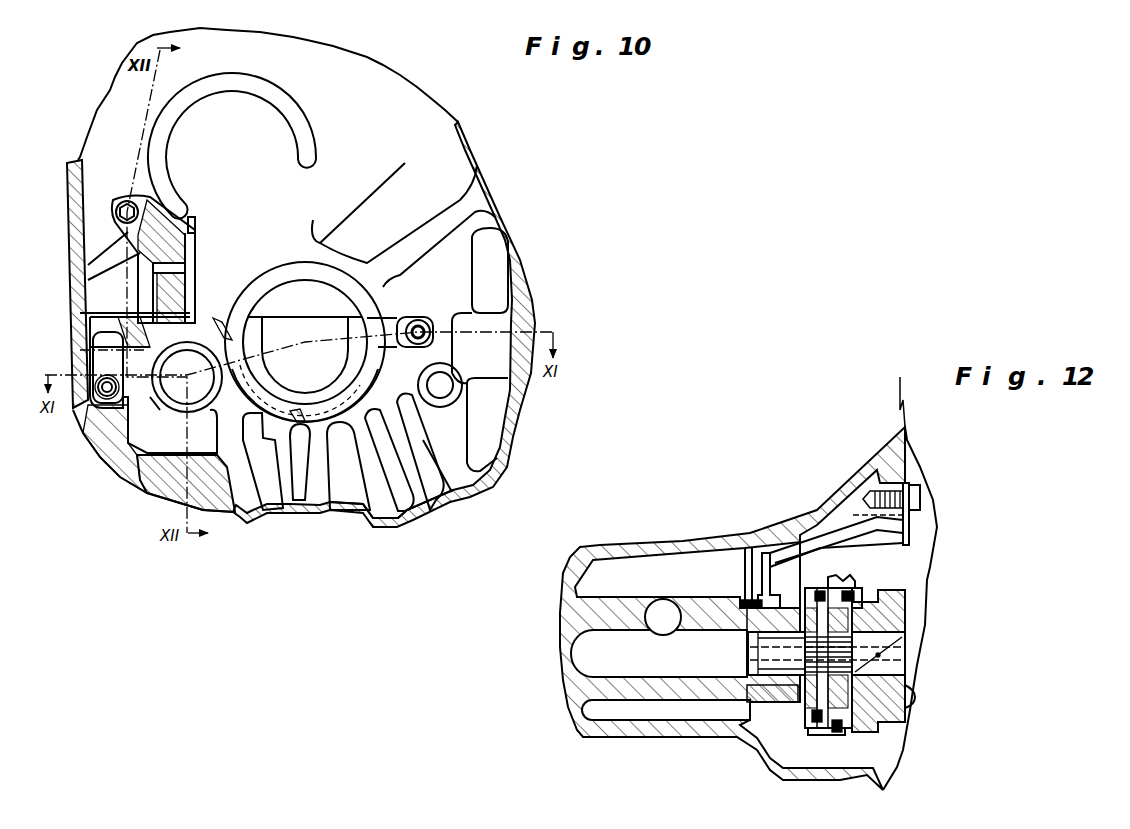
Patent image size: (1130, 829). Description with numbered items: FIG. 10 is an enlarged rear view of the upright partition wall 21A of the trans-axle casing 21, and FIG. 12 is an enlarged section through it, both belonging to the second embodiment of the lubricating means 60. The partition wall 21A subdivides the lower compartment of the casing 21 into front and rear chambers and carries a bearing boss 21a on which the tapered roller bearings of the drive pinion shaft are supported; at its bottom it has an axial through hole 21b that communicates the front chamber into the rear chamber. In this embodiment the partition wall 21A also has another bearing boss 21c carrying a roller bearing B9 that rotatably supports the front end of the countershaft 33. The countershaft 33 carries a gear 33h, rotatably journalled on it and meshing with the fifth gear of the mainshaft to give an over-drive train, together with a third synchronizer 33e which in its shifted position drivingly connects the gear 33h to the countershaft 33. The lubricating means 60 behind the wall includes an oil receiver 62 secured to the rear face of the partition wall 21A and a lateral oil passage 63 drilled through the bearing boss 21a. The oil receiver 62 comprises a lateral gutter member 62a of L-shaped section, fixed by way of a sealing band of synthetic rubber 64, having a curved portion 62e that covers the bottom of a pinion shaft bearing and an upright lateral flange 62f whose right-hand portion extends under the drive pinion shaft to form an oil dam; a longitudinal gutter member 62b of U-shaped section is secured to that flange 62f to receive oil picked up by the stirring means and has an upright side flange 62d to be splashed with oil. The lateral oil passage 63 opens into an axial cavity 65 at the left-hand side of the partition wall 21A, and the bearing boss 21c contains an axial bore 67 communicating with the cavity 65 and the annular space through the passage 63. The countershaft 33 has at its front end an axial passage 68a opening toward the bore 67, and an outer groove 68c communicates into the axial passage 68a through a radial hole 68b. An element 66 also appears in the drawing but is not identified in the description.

In FIG. 10, the trans-axle casing 21 is at (488, 168).
In FIG. 12, the trans-axle casing 21 is at (622, 738).
In FIG. 10, the upright partition wall 21A is at (372, 517).
In FIG. 10, the bearing boss 21a is at (288, 470).
In FIG. 10, the axial through hole 21b is at (268, 485).
In FIG. 10, the bearing boss 21c is at (170, 400).
In FIG. 12, the bearing boss 21c is at (662, 692).
In FIG. 12, the countershaft 33 is at (913, 637).
In FIG. 12, the third synchronizer 33e is at (818, 736).
In FIG. 12, the gear 33h is at (906, 742).
In FIG. 10, the lubricating means 60 is at (118, 298).
In FIG. 12, the lubricating means 60 is at (833, 544).
In FIG. 10, the oil receiver 62 is at (283, 396).
In FIG. 12, the oil receiver 62 is at (824, 538).
In FIG. 10, the lateral gutter member 62a is at (247, 328).
In FIG. 12, the lateral gutter member 62a is at (769, 600).
In FIG. 10, the longitudinal gutter member 62b is at (190, 280).
In FIG. 12, the longitudinal gutter member 62b is at (868, 545).
In FIG. 10, the upright side flange 62d is at (196, 230).
In FIG. 12, the upright side flange 62d is at (912, 523).
In FIG. 10, the curved portion 62e is at (397, 318).
In FIG. 10, the upright lateral flange 62f is at (323, 383).
In FIG. 12, the lateral oil passage 63 is at (662, 600).
In FIG. 10, the sealing band of synthetic rubber 64 is at (348, 466).
In FIG. 12, the sealing band of synthetic rubber 64 is at (748, 597).
In FIG. 10, the axial cavity 65 is at (257, 298).
In FIG. 12, the axial cavity 65 is at (630, 593).
In FIG. 12, the oil passage 66 is at (607, 651).
In FIG. 12, the axial bore 67 is at (712, 669).
In FIG. 12, the axial passage 68a is at (788, 680).
In FIG. 12, the radial hole 68b is at (888, 660).
In FIG. 12, the outer groove 68c is at (903, 642).
In FIG. 12, the roller bearing B9 is at (745, 700).